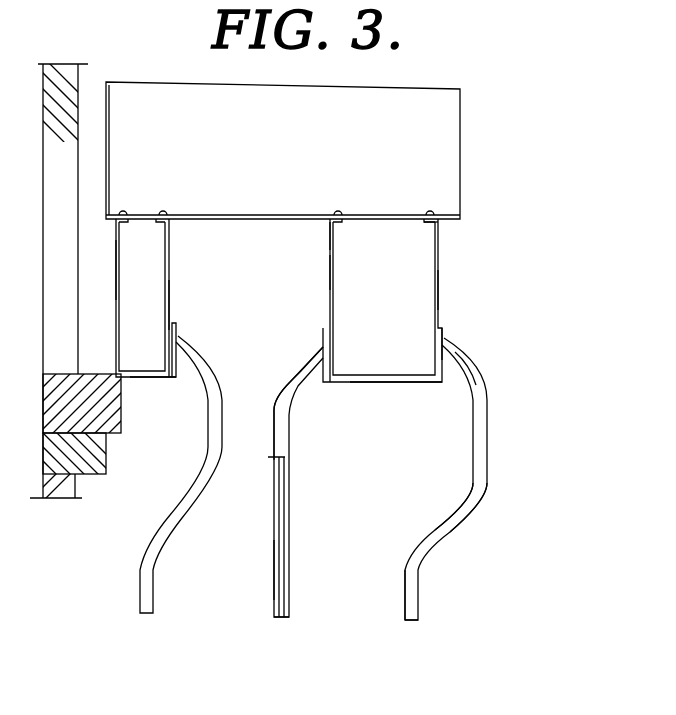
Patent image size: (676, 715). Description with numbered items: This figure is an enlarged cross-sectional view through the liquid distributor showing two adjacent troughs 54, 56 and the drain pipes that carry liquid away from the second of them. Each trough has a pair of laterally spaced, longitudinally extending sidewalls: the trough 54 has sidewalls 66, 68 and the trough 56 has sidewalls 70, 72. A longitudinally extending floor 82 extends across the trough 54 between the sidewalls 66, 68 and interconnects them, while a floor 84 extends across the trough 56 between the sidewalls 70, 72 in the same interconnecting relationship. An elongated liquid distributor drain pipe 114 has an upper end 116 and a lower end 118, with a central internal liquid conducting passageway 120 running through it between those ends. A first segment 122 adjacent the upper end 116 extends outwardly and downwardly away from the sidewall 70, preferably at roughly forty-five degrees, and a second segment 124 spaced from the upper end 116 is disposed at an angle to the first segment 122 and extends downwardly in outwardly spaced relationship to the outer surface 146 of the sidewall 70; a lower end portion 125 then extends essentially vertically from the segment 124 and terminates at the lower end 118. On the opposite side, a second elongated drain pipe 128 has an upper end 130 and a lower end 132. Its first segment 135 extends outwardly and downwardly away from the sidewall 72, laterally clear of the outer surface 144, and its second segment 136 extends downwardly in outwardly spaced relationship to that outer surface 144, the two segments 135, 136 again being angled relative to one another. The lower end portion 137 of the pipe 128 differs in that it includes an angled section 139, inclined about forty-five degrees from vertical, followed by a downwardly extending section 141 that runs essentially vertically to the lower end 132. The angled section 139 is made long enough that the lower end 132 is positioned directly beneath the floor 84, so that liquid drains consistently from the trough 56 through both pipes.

The trough 54 is at (158, 248).
The trough 56 is at (428, 270).
The sidewall 66 is at (116, 261).
The sidewall 68 is at (169, 302).
The sidewall 70 is at (330, 268).
The sidewall 72 is at (438, 288).
The floor 82 is at (160, 377).
The floor 84 is at (393, 382).
The liquid distributor drain pipe 114 is at (283, 448).
The upper end 116 is at (308, 364).
The lower end 118 is at (273, 612).
The liquid conducting passageway 120 is at (280, 513).
The first segment 122 is at (283, 383).
The second segment 124 is at (273, 437).
The lower end portion 125 is at (273, 572).
The liquid distributor drain pipe 128 is at (186, 511).
The upper end 130 is at (445, 357).
The lower end 132 is at (414, 622).
The first segment 135 is at (466, 380).
The second segment 136 is at (476, 470).
The lower end portion 137 is at (448, 528).
The angled section 139 is at (446, 520).
The downwardly extending section 141 is at (410, 583).
The outer surface 144 is at (440, 243).
The outer surface 146 is at (330, 236).